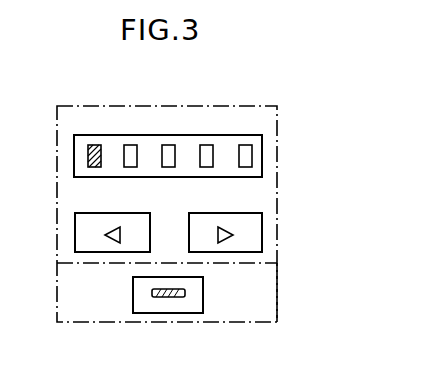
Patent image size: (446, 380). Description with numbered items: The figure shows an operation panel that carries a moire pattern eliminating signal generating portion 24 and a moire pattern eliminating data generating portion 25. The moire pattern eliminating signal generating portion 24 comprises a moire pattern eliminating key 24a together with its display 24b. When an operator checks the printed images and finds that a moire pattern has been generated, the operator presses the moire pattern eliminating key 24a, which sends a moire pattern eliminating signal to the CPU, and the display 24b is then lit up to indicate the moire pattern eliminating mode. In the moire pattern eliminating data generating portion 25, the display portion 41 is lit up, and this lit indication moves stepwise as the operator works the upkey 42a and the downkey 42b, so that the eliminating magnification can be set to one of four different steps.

The moire pattern eliminating data generating portion 25 is at (230, 107).
The display portion 41 is at (262, 152).
The upkey 42a is at (252, 213).
The downkey 42b is at (142, 213).
The moire pattern eliminating signal generating portion 24 is at (277, 305).
The moire pattern eliminating key 24a is at (203, 302).
The display 24b is at (162, 297).